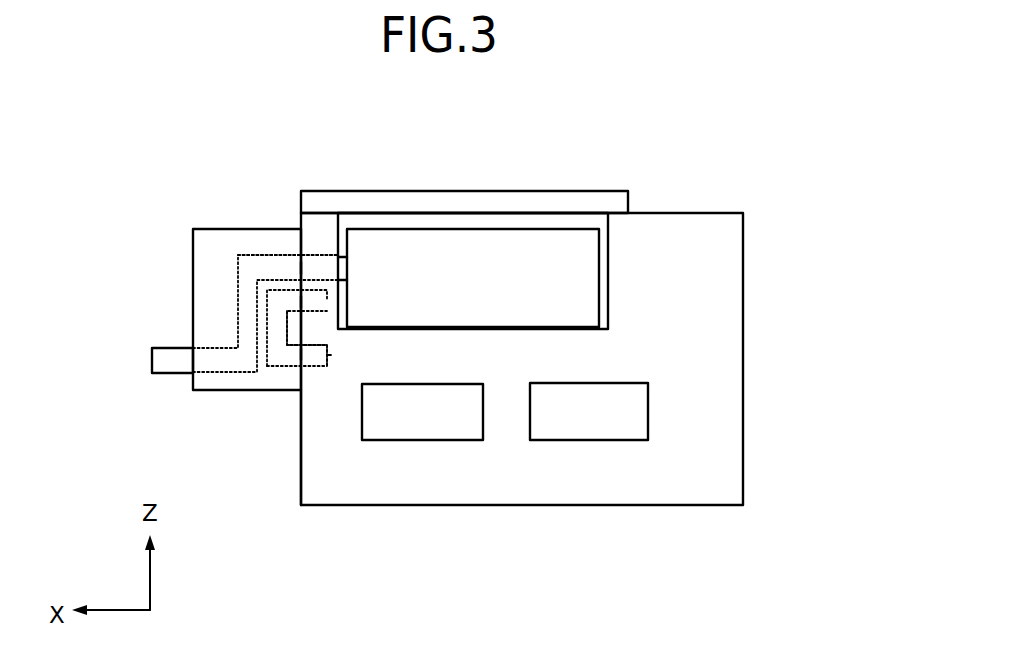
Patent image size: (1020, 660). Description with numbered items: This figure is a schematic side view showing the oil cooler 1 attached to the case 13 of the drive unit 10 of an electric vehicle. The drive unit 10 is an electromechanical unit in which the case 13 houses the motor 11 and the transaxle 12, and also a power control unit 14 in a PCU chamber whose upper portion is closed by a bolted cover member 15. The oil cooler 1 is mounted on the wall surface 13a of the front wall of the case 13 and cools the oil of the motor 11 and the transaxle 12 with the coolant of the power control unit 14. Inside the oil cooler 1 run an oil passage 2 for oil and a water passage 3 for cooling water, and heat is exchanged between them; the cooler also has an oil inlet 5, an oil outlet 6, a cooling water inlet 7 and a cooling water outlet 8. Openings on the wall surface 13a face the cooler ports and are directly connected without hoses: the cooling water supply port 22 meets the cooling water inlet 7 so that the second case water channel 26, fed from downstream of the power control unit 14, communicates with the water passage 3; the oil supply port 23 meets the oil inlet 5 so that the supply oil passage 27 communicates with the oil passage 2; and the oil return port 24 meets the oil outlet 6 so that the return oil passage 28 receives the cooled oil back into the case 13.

The oil cooler 1 is at (206, 222).
The oil passage 2 is at (270, 368).
The water passage 3 is at (255, 257).
The oil inlet 5 is at (301, 302).
The oil outlet 6 is at (301, 355).
The cooling water inlet 7 is at (301, 268).
The cooling water outlet 8 is at (152, 354).
The drive unit 10 is at (566, 316).
The motor 11 is at (460, 440).
The transaxle 12 is at (580, 440).
The case 13 is at (743, 391).
The wall surface 13a is at (301, 467).
The power control unit 14 is at (515, 229).
The cover member 15 is at (595, 191).
The cooling water supply port 22 is at (301, 268).
The oil supply port 23 is at (301, 303).
The oil return port 24 is at (301, 353).
The second case water channel 26 is at (324, 257).
The supply oil passage 27 is at (327, 300).
The return oil passage 28 is at (327, 355).